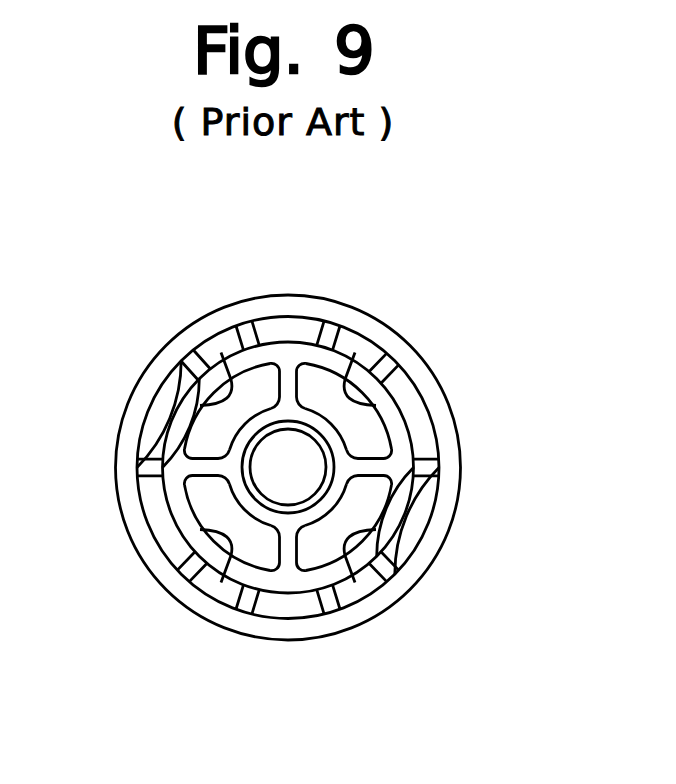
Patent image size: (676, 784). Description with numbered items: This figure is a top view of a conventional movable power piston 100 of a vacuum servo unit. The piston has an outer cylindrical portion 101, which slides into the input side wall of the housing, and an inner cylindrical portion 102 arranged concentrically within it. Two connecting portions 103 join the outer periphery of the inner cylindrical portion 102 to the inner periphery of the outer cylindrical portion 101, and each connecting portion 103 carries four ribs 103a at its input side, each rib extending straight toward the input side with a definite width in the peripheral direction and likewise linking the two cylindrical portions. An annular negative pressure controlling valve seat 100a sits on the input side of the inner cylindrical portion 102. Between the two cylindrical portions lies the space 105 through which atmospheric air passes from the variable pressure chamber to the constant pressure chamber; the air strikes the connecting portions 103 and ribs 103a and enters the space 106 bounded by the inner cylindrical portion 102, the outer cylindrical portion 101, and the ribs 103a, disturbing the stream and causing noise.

The movable power piston 100 is at (306, 473).
The annular negative pressure controlling valve seat 100a is at (188, 534).
The outer cylindrical portion 101 is at (462, 414).
The inner cylindrical portion 102 is at (150, 402).
The connecting portion 103 is at (292, 340).
The rib 103a is at (240, 338).
The space 105 is at (152, 440).
The space 106 is at (197, 404).